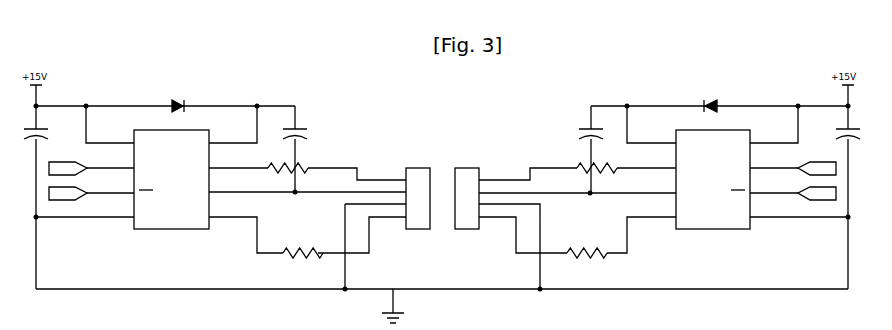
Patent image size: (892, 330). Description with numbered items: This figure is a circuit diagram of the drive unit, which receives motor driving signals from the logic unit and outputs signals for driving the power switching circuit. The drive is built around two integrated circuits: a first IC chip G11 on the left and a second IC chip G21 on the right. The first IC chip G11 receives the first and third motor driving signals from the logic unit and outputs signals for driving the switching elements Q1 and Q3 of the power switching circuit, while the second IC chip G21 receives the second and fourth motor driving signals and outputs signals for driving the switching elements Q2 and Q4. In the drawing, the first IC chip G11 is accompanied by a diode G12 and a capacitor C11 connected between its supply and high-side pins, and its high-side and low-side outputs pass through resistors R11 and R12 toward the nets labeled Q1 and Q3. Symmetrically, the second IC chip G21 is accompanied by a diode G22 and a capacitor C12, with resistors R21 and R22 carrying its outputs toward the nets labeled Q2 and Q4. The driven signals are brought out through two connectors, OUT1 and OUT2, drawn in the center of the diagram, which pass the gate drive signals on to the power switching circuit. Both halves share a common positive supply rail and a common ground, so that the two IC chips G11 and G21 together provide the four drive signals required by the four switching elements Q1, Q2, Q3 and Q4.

The first IC chip G11 is at (172, 229).
The bootstrap diode (first) G12 is at (177, 96).
The second IC chip G21 is at (712, 229).
The bootstrap diode (second) G22 is at (705, 96).
The bootstrap capacitor (first) C11 is at (313, 149).
The bootstrap capacitor (second) C12 is at (577, 149).
The high-side gate resistor (first) R11 is at (332, 163).
The low-side gate resistor (first) R12 is at (344, 246).
The high-side gate resistor (second) R21 is at (577, 163).
The low-side gate resistor (second) R22 is at (577, 246).
The output connector (first) OUT1 is at (415, 168).
The output connector (second) OUT2 is at (466, 168).
The switching element Q1 is at (363, 175).
The switching element Q2 is at (522, 175).
The switching element Q3 is at (362, 248).
The switching element Q4 is at (523, 248).